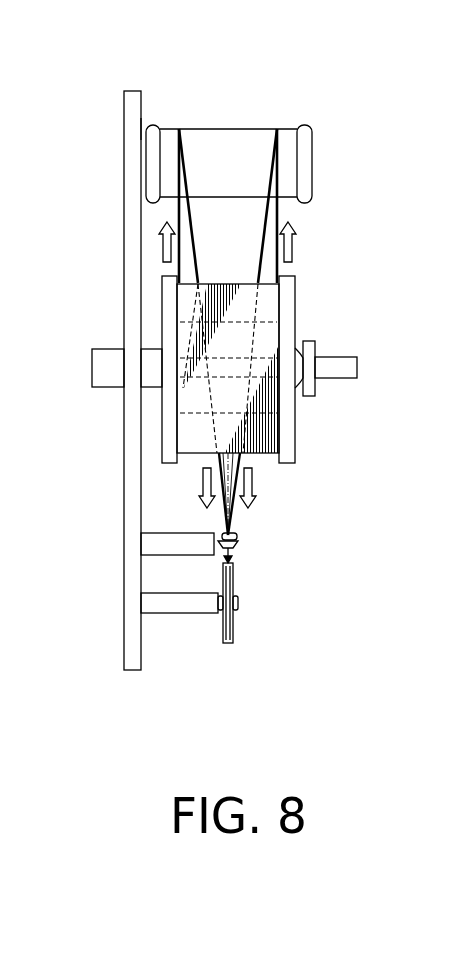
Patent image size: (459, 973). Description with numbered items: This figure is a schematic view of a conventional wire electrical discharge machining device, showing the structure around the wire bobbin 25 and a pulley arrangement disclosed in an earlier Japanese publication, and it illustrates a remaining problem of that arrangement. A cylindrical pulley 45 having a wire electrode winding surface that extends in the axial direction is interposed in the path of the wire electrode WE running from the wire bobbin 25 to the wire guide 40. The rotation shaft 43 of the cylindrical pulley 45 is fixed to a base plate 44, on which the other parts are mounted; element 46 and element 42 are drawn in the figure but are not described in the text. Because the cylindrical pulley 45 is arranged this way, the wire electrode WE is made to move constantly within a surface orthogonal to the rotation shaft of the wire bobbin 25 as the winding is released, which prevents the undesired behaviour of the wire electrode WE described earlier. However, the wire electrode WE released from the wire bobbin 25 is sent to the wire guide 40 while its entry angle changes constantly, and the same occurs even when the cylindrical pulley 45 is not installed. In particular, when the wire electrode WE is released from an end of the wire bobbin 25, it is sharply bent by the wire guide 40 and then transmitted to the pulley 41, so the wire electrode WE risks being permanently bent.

The base plate 44 is at (124, 250).
The mounting portion 46 is at (142, 130).
The cylindrical pulley 45 is at (313, 145).
The wire electrode WE is at (265, 268).
The wire bobbin 25 is at (296, 296).
The upper support arm 42 is at (170, 540).
The wire guide 40 is at (240, 537).
The rotation shaft 43 is at (177, 605).
The pulley 41 is at (236, 622).